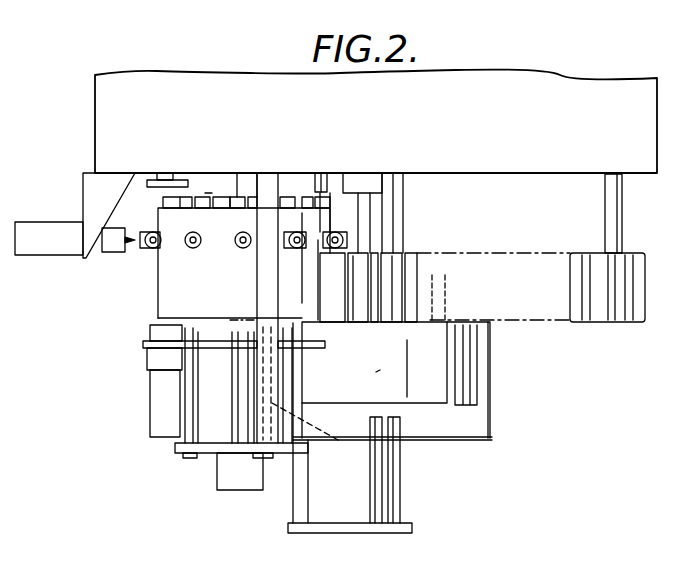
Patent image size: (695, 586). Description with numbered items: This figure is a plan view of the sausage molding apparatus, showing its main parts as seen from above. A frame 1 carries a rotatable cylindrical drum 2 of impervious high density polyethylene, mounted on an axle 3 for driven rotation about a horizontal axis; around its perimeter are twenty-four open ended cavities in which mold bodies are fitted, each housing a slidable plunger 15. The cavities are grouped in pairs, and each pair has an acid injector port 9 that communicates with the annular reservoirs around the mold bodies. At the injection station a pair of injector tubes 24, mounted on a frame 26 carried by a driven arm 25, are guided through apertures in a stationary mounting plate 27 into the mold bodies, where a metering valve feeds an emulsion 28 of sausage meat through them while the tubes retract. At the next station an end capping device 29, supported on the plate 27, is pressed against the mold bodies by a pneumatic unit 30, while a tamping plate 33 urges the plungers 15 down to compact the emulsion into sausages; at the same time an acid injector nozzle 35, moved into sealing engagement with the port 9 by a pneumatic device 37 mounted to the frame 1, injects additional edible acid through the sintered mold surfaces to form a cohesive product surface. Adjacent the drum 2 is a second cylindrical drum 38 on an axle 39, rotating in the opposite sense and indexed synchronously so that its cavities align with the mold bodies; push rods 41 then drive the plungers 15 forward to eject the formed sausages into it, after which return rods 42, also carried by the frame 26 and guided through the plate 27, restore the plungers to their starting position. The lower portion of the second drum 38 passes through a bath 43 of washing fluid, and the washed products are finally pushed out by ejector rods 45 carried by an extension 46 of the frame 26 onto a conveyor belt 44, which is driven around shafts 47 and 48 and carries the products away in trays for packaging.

The frame 1 is at (107, 112).
The cylindrical drum 2 is at (158, 302).
The axle 3 is at (245, 188).
The acid injector port 9 is at (200, 249).
The plunger 15 is at (208, 190).
The injector tubes 24 is at (233, 395).
The arm 25 is at (268, 173).
The frame 26 is at (283, 455).
The stationary mounting plate 27 is at (205, 350).
The emulsion 28 is at (233, 495).
The end capping device 29 is at (148, 332).
The pneumatic unit 30 is at (153, 438).
The tamping plate 33 is at (153, 173).
The acid injector nozzle 35 is at (110, 252).
The pneumatic device 37 is at (55, 257).
The second cylindrical drum 38 is at (478, 364).
The axle 39 is at (390, 194).
The push rods 41 is at (328, 188).
The return rods 42 is at (290, 368).
The bath 43 is at (482, 417).
The conveyor belt 44 is at (485, 254).
The ejector rods 45 is at (378, 453).
The extension 46 is at (362, 522).
The shaft 47 is at (368, 226).
The shaft 48 is at (612, 205).